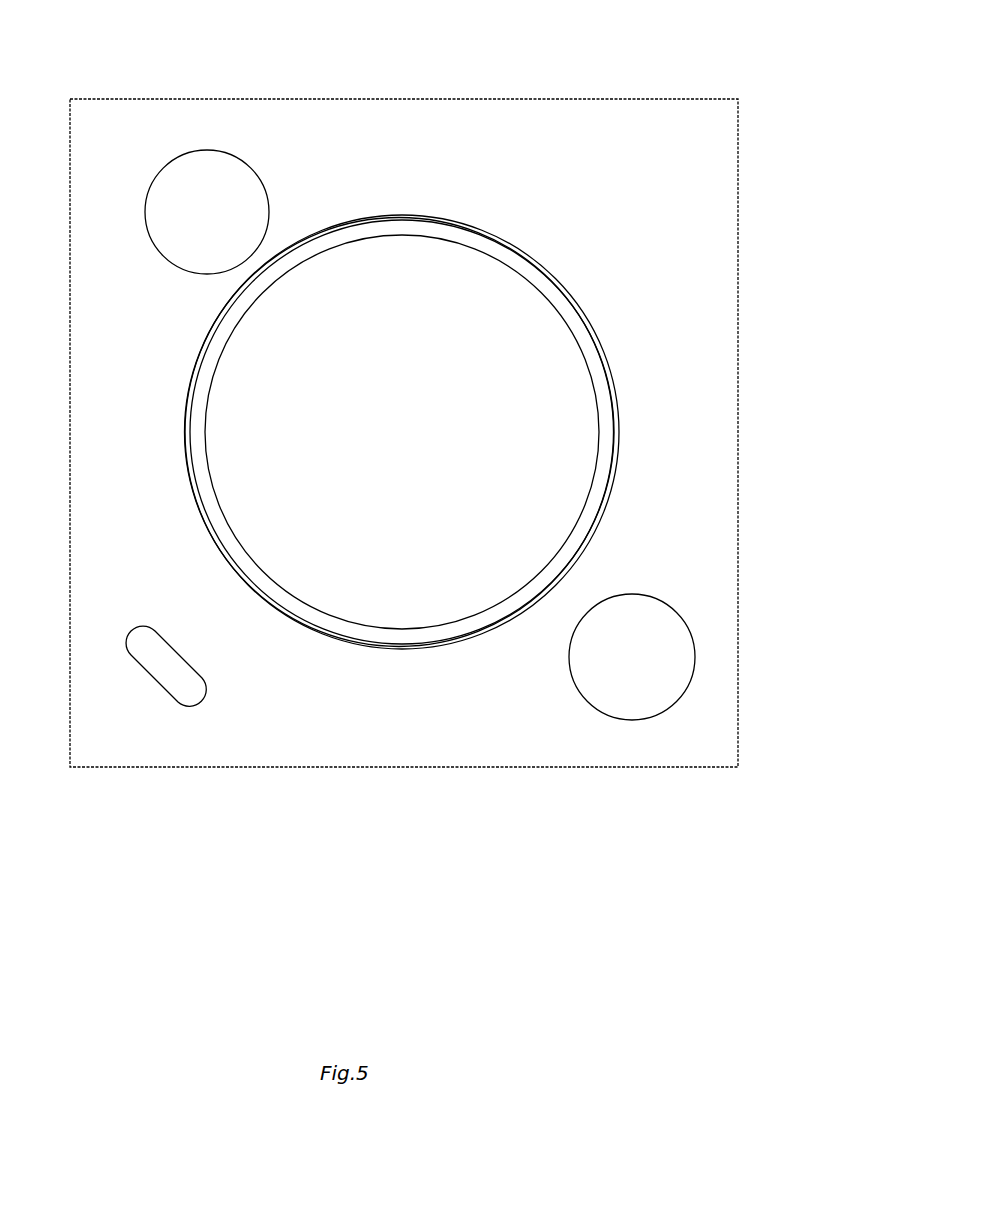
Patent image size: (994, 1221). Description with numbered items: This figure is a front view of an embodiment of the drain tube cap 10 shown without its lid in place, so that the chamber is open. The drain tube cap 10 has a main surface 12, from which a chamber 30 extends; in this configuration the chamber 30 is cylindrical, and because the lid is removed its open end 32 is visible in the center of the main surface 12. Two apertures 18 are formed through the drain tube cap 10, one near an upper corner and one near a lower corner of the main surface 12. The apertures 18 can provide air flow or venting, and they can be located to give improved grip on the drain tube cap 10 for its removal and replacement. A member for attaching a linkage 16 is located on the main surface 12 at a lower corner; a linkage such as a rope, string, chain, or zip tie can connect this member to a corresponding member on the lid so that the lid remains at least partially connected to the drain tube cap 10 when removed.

The drain tube cap 10 is at (602, 47).
The main surface 12 is at (97, 358).
The member for attaching a linkage 16 is at (163, 660).
The aperture 18 is at (167, 193).
The chamber 30 is at (543, 264).
The open end 32 is at (525, 383).